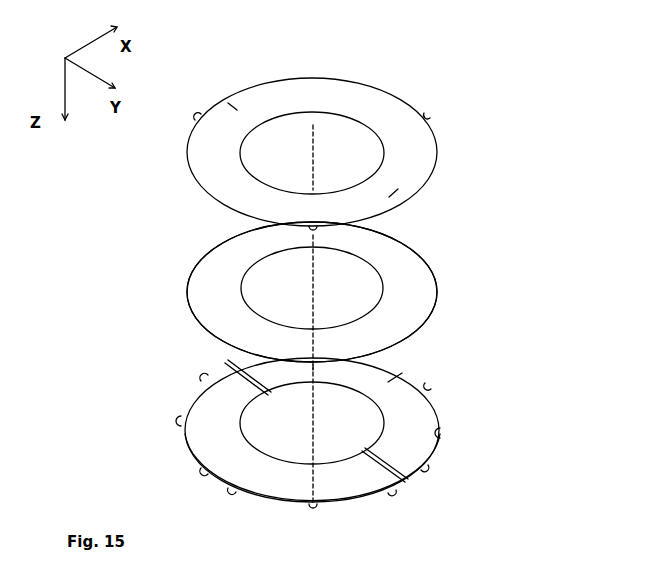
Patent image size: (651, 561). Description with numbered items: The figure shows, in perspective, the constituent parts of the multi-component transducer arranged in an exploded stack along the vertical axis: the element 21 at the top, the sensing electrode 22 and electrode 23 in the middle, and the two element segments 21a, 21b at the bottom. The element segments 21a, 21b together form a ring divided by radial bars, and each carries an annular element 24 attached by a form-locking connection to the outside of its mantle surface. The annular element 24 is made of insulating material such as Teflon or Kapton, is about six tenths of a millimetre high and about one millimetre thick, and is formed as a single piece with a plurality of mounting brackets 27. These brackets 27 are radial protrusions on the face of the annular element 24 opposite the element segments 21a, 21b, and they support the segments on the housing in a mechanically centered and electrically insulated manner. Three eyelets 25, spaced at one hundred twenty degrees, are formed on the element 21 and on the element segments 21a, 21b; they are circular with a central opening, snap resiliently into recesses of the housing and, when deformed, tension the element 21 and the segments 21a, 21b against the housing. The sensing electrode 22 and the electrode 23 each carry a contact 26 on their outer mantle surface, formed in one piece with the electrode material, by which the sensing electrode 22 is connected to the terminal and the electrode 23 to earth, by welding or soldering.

The element 21 is at (428, 152).
The element segment 21a is at (212, 427).
The element segment 21b is at (405, 400).
The sensing electrode 22 is at (197, 287).
The electrode 23 is at (246, 296).
The annular element 24 is at (405, 488).
The eyelet 25 is at (428, 115).
The contact 26 is at (440, 288).
The mounting bracket 27 is at (442, 448).